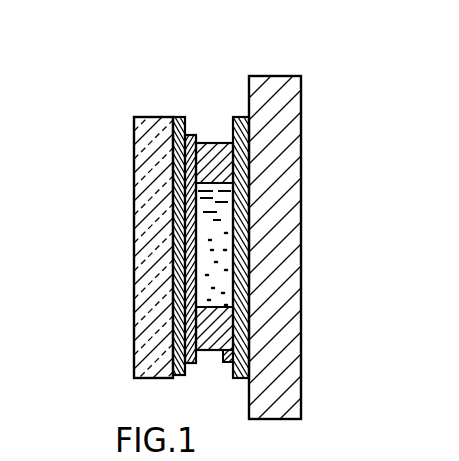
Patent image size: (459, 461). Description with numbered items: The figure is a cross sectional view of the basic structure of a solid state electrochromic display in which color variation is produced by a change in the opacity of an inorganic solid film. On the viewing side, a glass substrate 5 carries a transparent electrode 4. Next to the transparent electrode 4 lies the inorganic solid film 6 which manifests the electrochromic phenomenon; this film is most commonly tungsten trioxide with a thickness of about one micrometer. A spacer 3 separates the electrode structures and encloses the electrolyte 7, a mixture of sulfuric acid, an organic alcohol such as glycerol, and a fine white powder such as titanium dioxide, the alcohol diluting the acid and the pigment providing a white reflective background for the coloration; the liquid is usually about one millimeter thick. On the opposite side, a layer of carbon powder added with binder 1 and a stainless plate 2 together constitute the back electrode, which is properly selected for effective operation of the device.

The layer of carbon powder added with binder 1 is at (249, 146).
The stainless plate 2 is at (301, 85).
The spacer 3 is at (233, 355).
The transparent electrode 4 is at (175, 376).
The glass substrate 5 is at (134, 153).
The inorganic solid film 6 is at (193, 136).
The electrolyte 7 is at (226, 216).